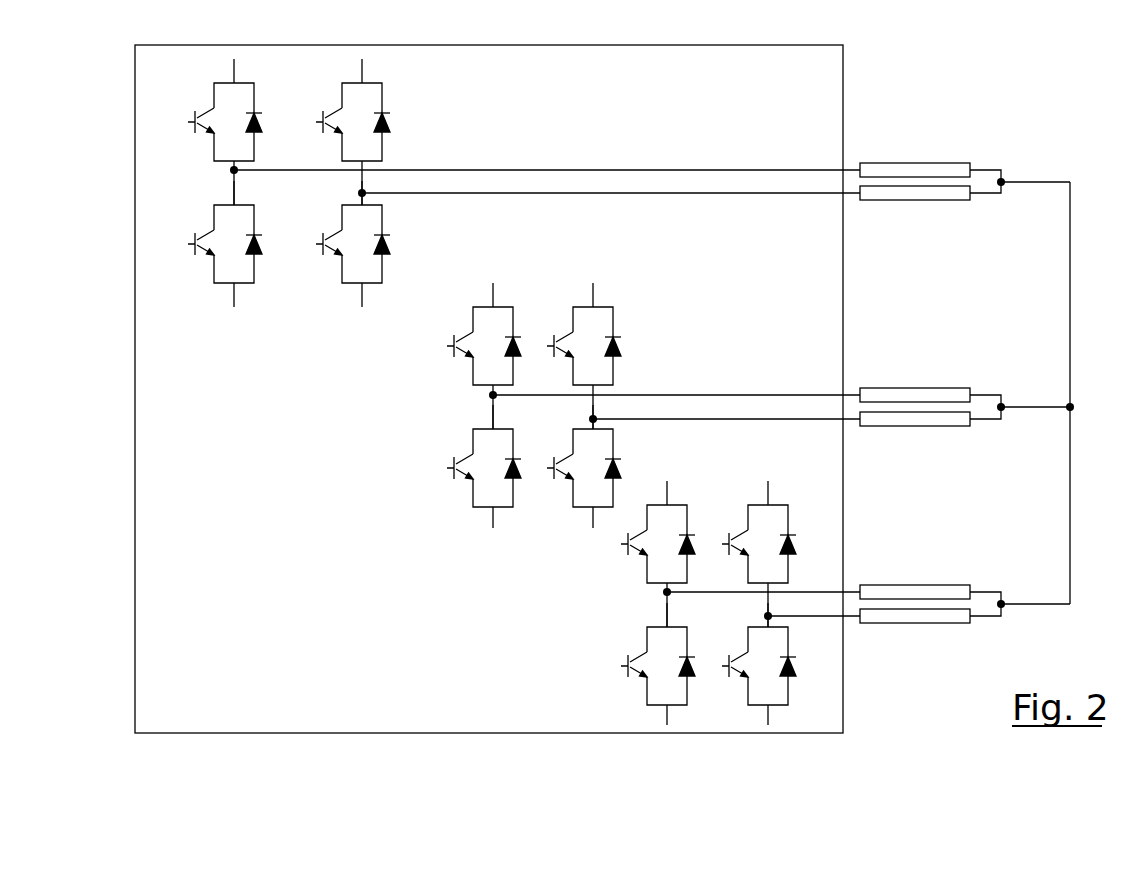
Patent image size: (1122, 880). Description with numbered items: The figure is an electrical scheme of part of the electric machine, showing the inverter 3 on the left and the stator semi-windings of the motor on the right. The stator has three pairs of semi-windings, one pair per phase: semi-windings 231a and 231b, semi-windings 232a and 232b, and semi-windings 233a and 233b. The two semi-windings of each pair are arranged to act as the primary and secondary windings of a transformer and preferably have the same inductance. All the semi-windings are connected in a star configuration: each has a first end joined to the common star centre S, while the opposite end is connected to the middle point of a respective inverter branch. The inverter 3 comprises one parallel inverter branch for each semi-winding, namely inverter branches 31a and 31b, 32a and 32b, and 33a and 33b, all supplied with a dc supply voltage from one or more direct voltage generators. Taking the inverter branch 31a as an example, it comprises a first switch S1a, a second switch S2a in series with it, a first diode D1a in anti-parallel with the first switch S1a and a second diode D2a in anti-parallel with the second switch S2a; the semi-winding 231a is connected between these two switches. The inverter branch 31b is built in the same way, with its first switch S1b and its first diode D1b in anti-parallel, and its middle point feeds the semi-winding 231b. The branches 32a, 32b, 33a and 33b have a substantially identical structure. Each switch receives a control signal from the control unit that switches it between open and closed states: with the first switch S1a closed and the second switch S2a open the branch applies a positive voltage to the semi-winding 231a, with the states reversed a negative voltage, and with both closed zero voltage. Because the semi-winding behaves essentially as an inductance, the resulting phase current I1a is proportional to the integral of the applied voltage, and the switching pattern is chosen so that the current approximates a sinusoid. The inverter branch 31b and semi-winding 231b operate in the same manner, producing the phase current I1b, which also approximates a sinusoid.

The inverter 3 is at (844, 80).
The inverter branch 31a is at (236, 202).
The inverter branch 31b is at (367, 202).
The inverter branch 32a is at (505, 275).
The inverter branch 32b is at (610, 275).
The inverter branch 33a is at (682, 487).
The inverter branch 33b is at (786, 487).
The first switch S1a is at (197, 102).
The second switch S2a is at (197, 224).
The first switch S1b is at (328, 102).
The first diode D1a is at (265, 140).
The second diode D2a is at (265, 262).
The first diode D1b is at (395, 139).
The phase current I1a is at (735, 161).
The phase current I1b is at (735, 208).
The semi-winding 231a is at (917, 162).
The semi-winding 231b is at (915, 202).
The semi-winding 232a is at (917, 388).
The semi-winding 232b is at (915, 427).
The semi-winding 233a is at (915, 585).
The semi-winding 233b is at (915, 624).
The star centre S is at (1073, 403).